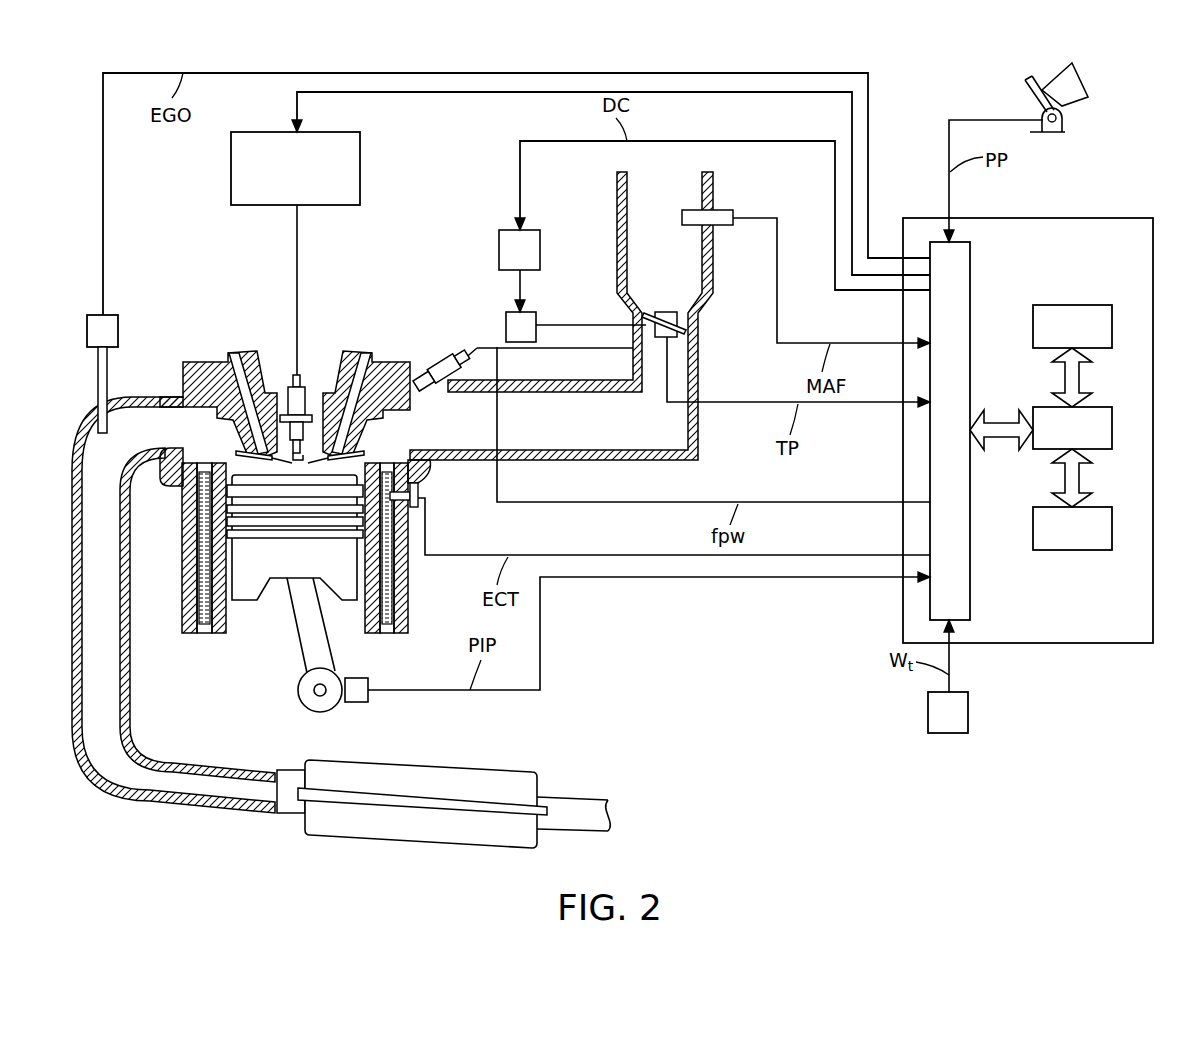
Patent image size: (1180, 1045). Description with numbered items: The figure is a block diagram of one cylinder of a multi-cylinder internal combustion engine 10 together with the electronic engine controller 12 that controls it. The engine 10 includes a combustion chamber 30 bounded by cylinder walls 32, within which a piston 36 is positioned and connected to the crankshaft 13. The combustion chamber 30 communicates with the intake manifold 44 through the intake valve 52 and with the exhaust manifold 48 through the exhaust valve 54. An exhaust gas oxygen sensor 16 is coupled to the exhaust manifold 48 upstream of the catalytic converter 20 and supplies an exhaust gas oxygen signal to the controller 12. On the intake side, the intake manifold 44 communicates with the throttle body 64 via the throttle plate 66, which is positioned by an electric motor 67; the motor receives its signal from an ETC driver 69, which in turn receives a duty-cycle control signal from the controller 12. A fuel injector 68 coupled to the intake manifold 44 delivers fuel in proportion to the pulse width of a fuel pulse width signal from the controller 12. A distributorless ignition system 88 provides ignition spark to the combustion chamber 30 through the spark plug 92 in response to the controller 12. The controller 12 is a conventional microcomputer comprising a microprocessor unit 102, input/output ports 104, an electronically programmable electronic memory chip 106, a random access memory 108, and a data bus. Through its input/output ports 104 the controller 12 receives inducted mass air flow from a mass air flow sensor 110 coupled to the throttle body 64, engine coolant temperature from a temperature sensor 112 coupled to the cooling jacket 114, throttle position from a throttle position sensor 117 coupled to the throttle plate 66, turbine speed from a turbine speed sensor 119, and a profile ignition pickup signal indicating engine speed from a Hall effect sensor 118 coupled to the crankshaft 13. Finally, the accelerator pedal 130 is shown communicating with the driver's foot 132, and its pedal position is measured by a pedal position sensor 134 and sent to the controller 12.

The internal combustion engine 10 is at (248, 697).
The electronic engine controller 12 is at (1097, 218).
The crankshaft 13 is at (310, 700).
The exhaust gas oxygen sensor 16 is at (113, 314).
The catalytic converter 20 is at (505, 768).
The combustion chamber 30 is at (280, 468).
The cylinder walls 32 is at (222, 637).
The piston 36 is at (295, 565).
The intake manifold 44 is at (601, 428).
The exhaust manifold 48 is at (90, 502).
The intake valve 52 is at (345, 446).
The exhaust valve 54 is at (250, 446).
The throttle body 64 is at (690, 190).
The throttle plate 66 is at (650, 312).
The electric motor 67 is at (538, 317).
The fuel injector 68 is at (442, 360).
The ETC driver 69 is at (532, 230).
The distributorless ignition system 88 is at (363, 155).
The spark plug 92 is at (302, 380).
The microprocessor unit 102 is at (1103, 407).
The input/output ports 104 is at (970, 267).
The electronic memory chip 106 is at (1085, 305).
The random access memory 108 is at (1103, 507).
The mass air flow sensor 110 is at (736, 212).
The temperature sensor 112 is at (420, 487).
The cooling jacket 114 is at (388, 587).
The throttle position sensor 117 is at (672, 312).
The Hall effect sensor 118 is at (370, 683).
The turbine speed sensor 119 is at (970, 712).
The accelerator pedal 130 is at (1028, 95).
The driver's foot 132 is at (1075, 85).
The pedal position sensor 134 is at (1062, 120).